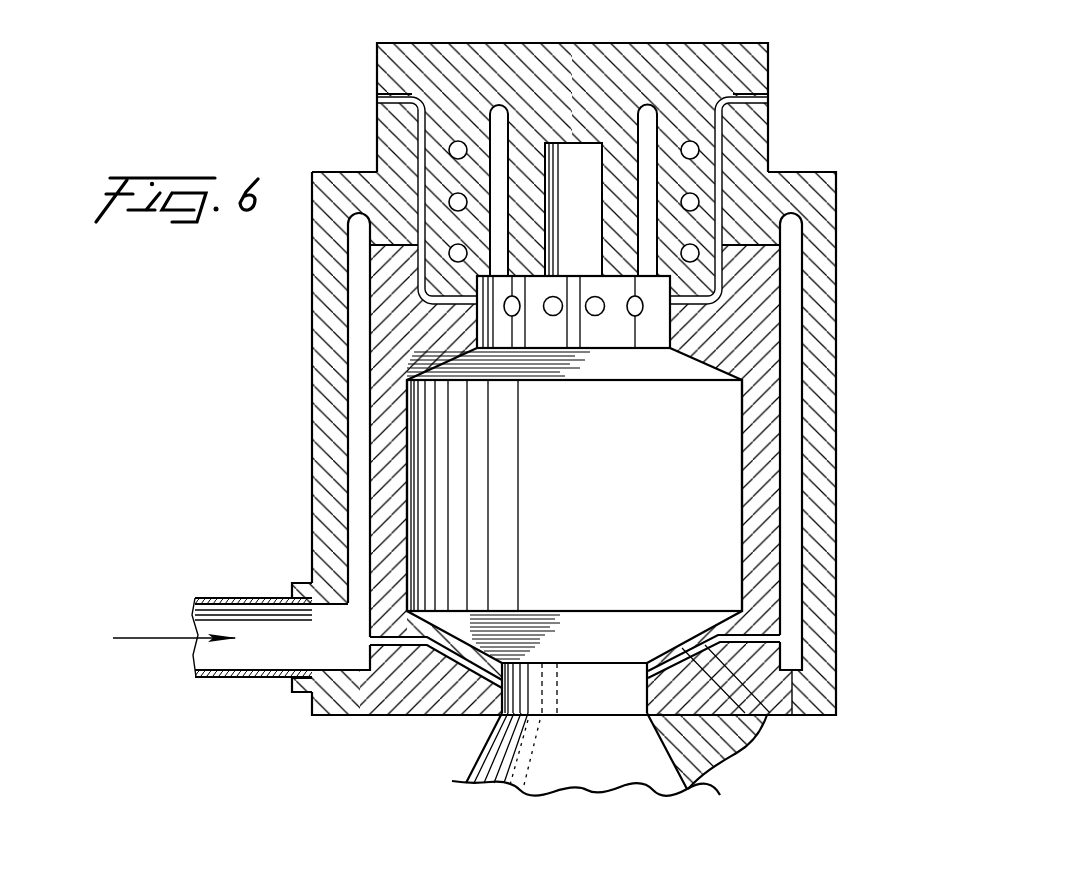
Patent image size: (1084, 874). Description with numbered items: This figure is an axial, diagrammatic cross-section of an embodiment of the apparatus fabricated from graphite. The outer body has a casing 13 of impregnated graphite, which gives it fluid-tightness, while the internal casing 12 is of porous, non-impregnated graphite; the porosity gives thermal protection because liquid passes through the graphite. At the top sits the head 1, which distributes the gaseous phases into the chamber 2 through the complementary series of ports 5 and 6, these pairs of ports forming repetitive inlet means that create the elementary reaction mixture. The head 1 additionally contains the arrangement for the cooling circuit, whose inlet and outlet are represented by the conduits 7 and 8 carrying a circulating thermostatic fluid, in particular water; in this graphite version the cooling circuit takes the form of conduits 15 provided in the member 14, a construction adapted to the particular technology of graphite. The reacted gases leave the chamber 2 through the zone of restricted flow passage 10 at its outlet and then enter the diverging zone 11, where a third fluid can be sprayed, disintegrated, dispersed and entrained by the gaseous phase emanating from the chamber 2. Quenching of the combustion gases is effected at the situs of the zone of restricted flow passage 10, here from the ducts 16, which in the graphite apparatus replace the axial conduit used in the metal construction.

The head 1 is at (583, 192).
The chamber 2 is at (710, 508).
The ports 5 is at (501, 113).
The ports 6 is at (725, 288).
The cooling circuit inlet conduit 7 is at (248, 662).
The cooling circuit outlet conduit 8 is at (393, 188).
The zone of restricted flow passage 10 is at (535, 692).
The diverging zone 11 is at (645, 760).
The internal casing 12 is at (388, 490).
The casing of the outer body 13 is at (325, 443).
The member 14 is at (623, 238).
The conduits 15 is at (452, 152).
The ducts 16 is at (393, 718).